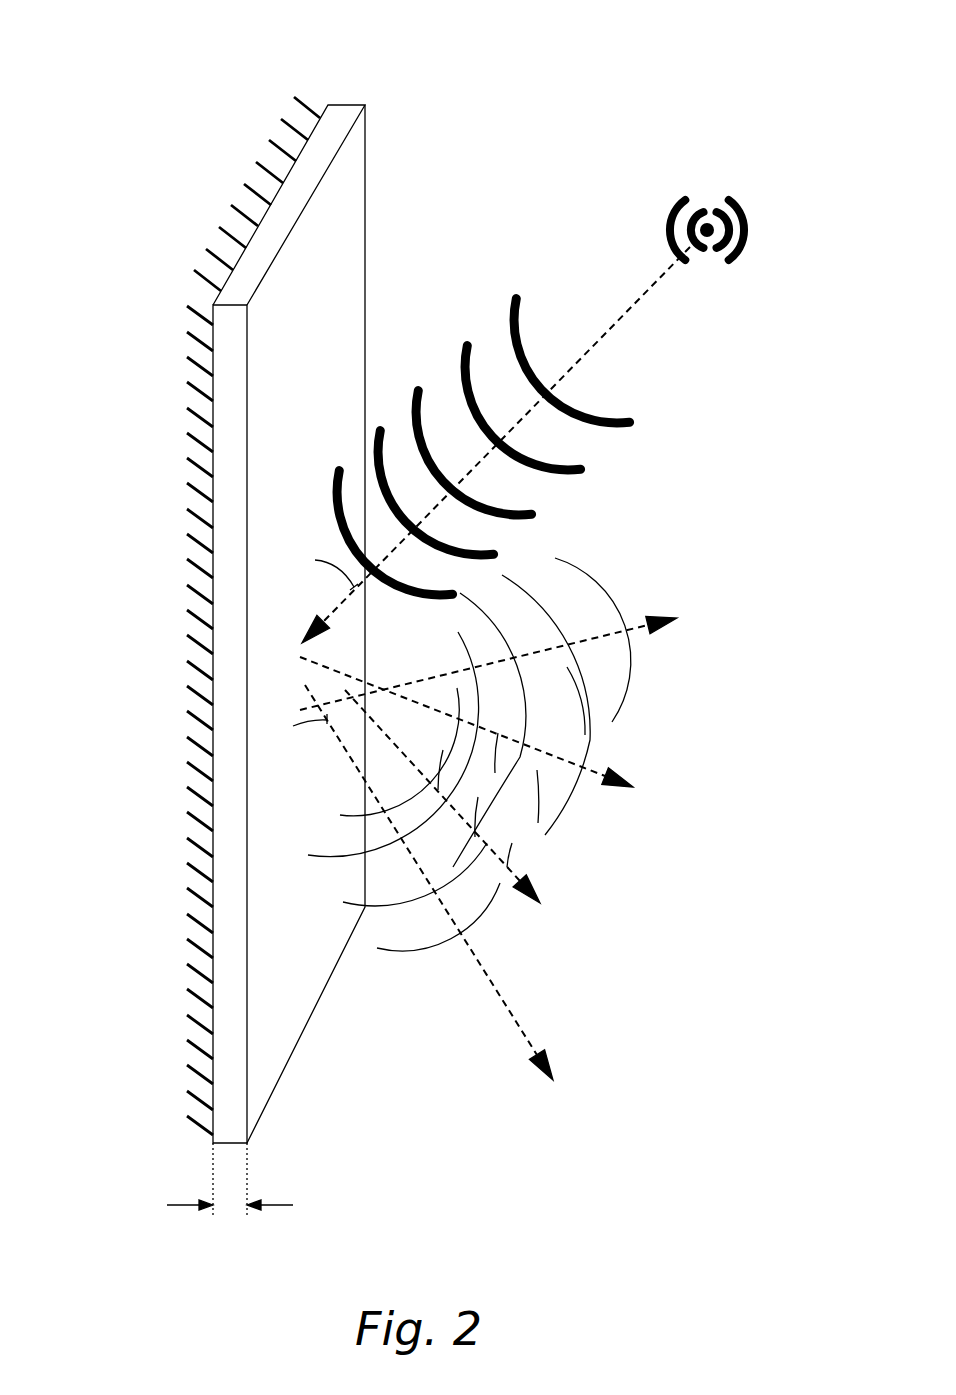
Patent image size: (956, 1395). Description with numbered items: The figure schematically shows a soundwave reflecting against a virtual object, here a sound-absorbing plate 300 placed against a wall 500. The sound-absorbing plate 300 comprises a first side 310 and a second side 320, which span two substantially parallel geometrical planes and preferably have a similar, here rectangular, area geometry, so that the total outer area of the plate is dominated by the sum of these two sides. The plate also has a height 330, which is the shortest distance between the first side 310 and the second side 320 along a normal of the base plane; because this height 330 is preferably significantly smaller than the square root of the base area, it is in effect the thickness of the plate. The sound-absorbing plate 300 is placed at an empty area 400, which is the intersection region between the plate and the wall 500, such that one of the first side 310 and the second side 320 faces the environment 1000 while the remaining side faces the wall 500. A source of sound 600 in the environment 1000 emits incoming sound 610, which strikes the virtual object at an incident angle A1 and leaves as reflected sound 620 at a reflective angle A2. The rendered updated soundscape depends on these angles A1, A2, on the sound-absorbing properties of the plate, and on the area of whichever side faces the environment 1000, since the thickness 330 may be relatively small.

The sound-absorbing plate 300 is at (318, 585).
The first side 310 is at (333, 247).
The second side 320 is at (233, 260).
The height 330 is at (180, 1205).
The empty area 400 is at (275, 163).
The wall 500 is at (200, 22).
The source of sound 600 is at (710, 200).
The incoming sound 610 is at (628, 305).
The reflected sound 620 is at (513, 1012).
The environment 1000 is at (802, 483).
The incident angle A1 is at (335, 562).
The reflective angle A2 is at (312, 728).